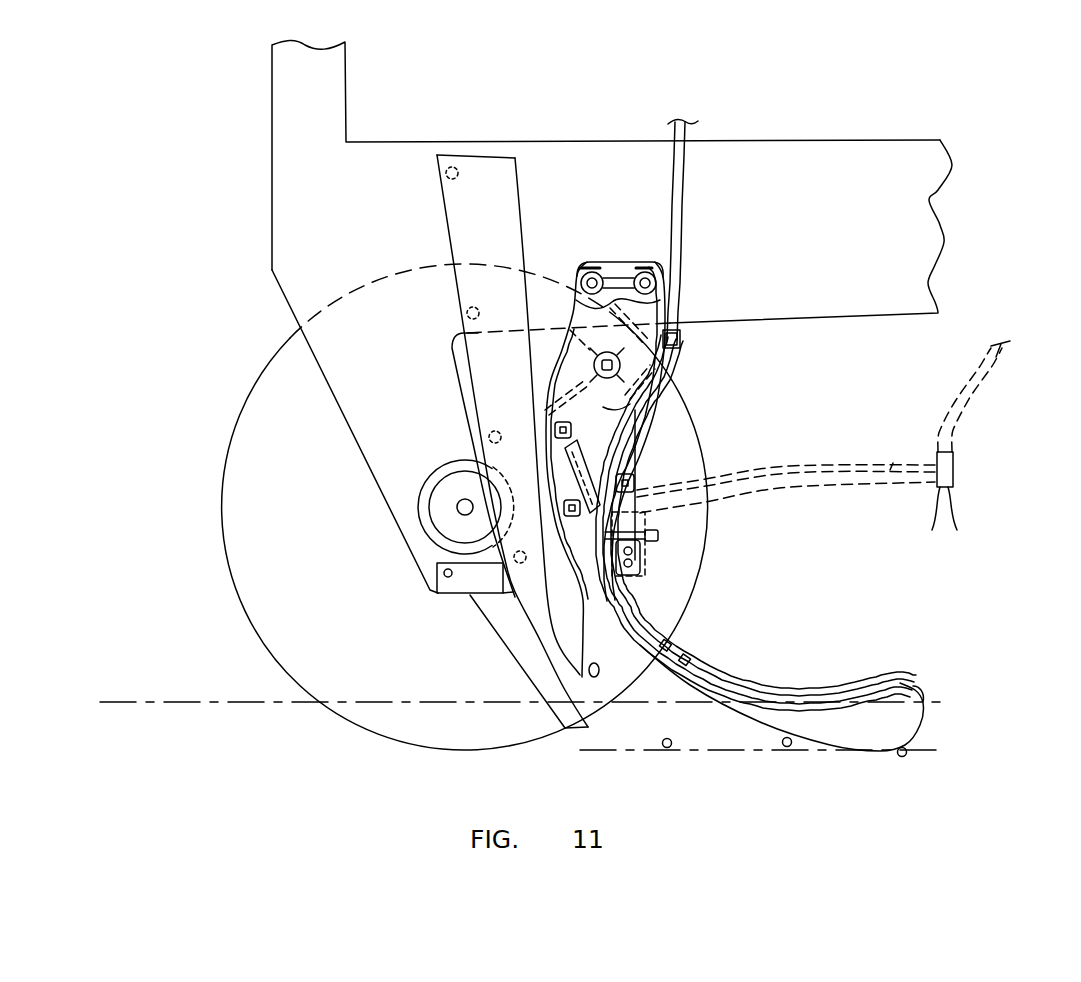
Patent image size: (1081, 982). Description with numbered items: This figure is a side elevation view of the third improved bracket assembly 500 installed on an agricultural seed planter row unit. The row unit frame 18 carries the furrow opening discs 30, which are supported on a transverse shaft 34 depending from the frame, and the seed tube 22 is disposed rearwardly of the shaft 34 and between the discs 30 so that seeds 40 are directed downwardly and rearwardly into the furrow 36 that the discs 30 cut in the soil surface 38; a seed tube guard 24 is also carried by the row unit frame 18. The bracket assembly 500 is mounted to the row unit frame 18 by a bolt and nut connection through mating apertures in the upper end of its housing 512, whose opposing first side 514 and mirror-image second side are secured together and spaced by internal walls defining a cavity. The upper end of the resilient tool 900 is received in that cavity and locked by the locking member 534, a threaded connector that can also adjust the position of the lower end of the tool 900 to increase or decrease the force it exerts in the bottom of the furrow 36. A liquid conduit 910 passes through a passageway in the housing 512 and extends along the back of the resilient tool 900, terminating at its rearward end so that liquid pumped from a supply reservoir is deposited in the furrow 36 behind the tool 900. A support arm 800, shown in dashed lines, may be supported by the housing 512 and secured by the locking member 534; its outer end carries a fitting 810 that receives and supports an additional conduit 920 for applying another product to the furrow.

The row unit frame 18 is at (862, 154).
The seed tube 22 is at (480, 362).
The seed tube guard 24 is at (513, 640).
The furrow opening discs 30 is at (235, 521).
The transverse shaft 34 is at (458, 512).
The furrow 36 is at (723, 738).
The soil surface 38 is at (152, 700).
The seeds 40 is at (446, 176).
The third improved bracket assembly 500 is at (640, 456).
The housing 512 is at (658, 366).
The first side 514 is at (603, 407).
The locking member 534 is at (657, 540).
The support arm 800 is at (893, 466).
The fitting 810 is at (955, 463).
The resilient tool 900 is at (881, 710).
The liquid conduit 910 is at (683, 140).
The conduit 920 is at (990, 385).